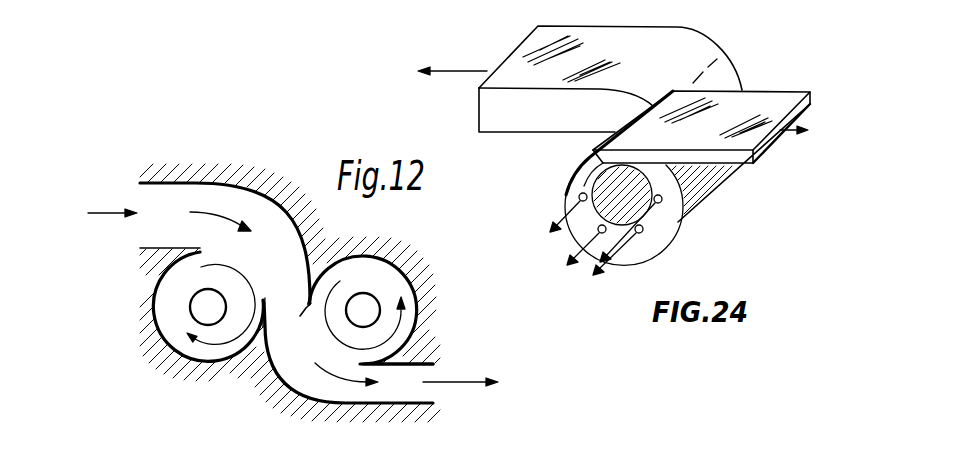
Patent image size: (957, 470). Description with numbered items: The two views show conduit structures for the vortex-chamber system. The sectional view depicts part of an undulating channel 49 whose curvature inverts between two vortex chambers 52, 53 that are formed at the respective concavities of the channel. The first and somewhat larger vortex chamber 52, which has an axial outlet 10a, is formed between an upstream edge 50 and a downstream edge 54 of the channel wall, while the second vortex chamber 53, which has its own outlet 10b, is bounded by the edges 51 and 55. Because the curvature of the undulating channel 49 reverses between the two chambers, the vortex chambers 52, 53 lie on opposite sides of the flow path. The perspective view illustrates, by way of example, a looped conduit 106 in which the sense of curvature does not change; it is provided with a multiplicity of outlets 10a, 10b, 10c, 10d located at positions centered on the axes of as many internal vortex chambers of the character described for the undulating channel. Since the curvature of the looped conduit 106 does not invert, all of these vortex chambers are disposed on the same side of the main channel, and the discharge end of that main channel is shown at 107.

In FIG. 12, the undulating channel 49 is at (147, 197).
In FIG. 12, the upstream edge 50 is at (203, 250).
In FIG. 12, the axial outlet 10a is at (172, 270).
In FIG. 24, the axial outlet 10a is at (580, 195).
In FIG. 12, the outlet 10b is at (380, 296).
In FIG. 24, the outlet 10b is at (599, 230).
In FIG. 24, the outlet 10c is at (642, 234).
In FIG. 24, the outlet 10d is at (662, 203).
In FIG. 12, the edge 51 is at (296, 321).
In FIG. 12, the first vortex chamber 52 is at (180, 322).
In FIG. 12, the second vortex chamber 53 is at (378, 289).
In FIG. 12, the downstream edge 54 is at (274, 298).
In FIG. 12, the edge 55 is at (362, 363).
In FIG. 24, the looped conduit 106 is at (702, 43).
In FIG. 24, the discharge end 107 is at (765, 148).